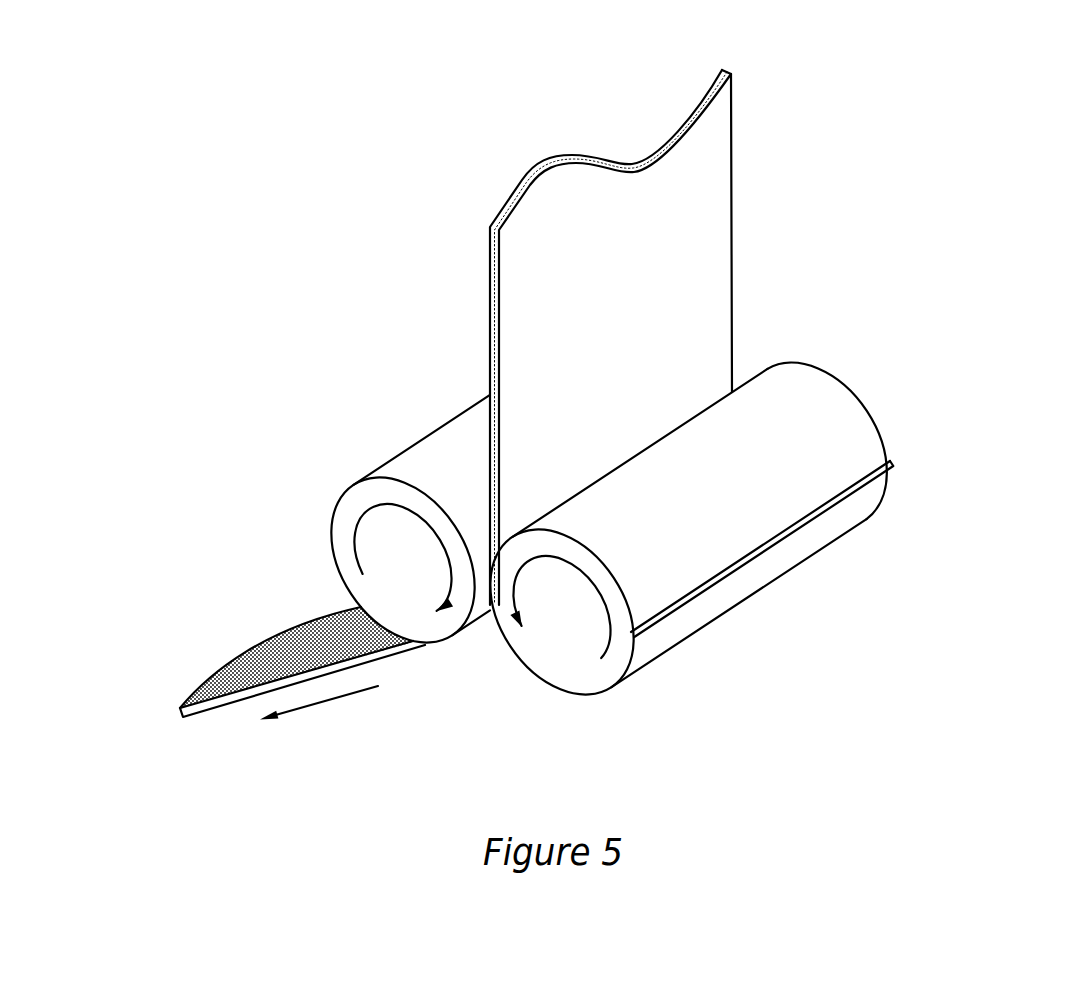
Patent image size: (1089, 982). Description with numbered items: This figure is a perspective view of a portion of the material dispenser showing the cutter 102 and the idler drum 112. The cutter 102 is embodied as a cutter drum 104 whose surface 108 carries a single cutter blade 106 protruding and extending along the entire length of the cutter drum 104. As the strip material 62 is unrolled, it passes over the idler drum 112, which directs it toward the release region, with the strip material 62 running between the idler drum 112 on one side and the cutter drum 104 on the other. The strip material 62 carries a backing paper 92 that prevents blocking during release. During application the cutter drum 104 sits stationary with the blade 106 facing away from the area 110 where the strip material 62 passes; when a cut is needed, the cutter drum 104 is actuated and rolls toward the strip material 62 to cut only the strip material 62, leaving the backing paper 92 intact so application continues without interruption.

The strip material 62 is at (700, 216).
The backing paper 92 is at (488, 250).
The cutter 102 is at (755, 492).
The cutter drum 104 is at (814, 441).
The cutter blade 106 is at (888, 480).
The surface 108 is at (847, 453).
The area 110 is at (553, 368).
The idler drum 112 is at (367, 525).